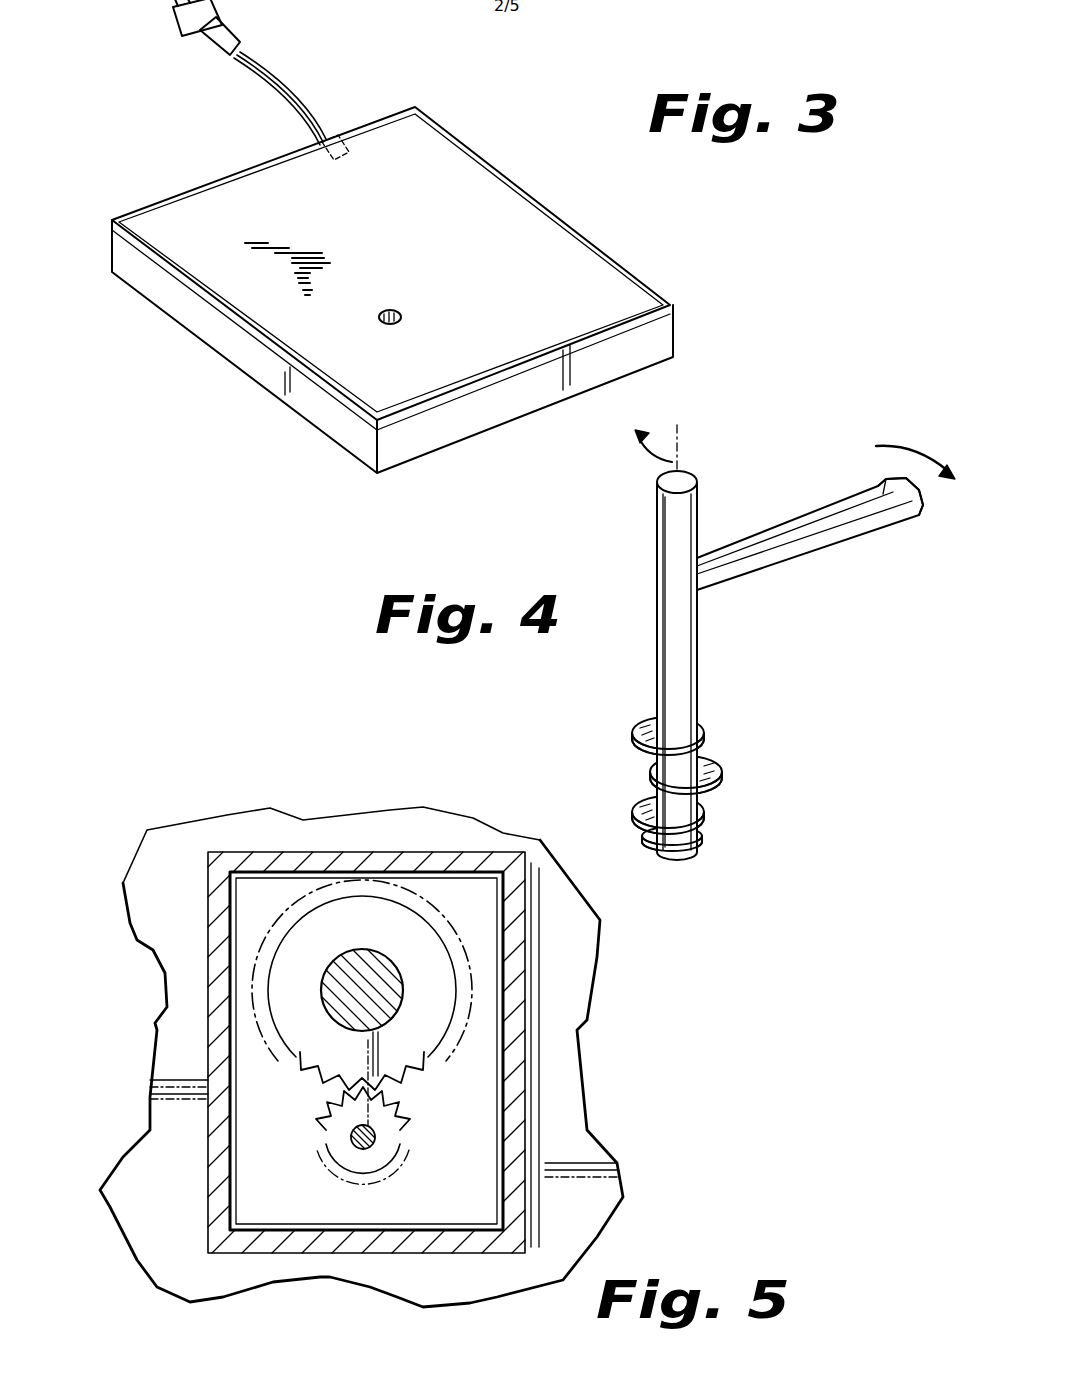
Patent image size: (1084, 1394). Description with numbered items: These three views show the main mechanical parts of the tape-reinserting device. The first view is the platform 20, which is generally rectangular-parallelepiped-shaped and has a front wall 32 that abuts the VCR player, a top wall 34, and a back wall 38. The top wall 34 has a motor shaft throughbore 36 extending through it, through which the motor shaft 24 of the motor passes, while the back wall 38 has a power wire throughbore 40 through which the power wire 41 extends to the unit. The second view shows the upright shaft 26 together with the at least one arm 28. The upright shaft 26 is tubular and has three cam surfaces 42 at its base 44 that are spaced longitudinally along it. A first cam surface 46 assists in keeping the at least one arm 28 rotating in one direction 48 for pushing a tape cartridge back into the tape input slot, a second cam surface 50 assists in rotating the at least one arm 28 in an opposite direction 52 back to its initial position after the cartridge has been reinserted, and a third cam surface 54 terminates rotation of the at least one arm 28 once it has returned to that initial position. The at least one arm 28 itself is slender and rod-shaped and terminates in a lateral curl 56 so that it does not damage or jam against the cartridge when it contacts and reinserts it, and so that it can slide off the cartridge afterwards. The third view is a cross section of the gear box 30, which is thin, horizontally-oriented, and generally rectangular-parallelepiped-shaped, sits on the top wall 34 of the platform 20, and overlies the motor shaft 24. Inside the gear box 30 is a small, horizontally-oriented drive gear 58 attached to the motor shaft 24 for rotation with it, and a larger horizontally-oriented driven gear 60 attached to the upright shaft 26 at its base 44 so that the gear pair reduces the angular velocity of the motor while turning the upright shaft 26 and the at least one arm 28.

In FIG. 3, the platform 20 is at (513, 128).
In FIG. 5, the motor shaft 24 is at (353, 1140).
In FIG. 4, the upright shaft 26 is at (667, 630).
In FIG. 5, the upright shaft 26 is at (350, 950).
In FIG. 4, the at least one arm 28 is at (786, 540).
In FIG. 5, the gear box 30 is at (242, 838).
In FIG. 3, the front wall 32 is at (655, 333).
In FIG. 3, the top wall 34 is at (537, 257).
In FIG. 5, the top wall 34 is at (153, 860).
In FIG. 3, the motor shaft throughbore 36 is at (393, 310).
In FIG. 3, the back wall 38 is at (186, 194).
In FIG. 3, the power wire throughbore 40 is at (340, 152).
In FIG. 3, the power wire 41 is at (296, 101).
In FIG. 4, the three cam surfaces 42 is at (793, 748).
In FIG. 4, the base 44 is at (697, 840).
In FIG. 5, the base 44 is at (392, 987).
In FIG. 4, the first cam surface 46 is at (638, 730).
In FIG. 4, the one direction 48 is at (904, 458).
In FIG. 4, the second cam surface 50 is at (717, 772).
In FIG. 4, the opposite direction 52 is at (655, 462).
In FIG. 4, the third cam surface 54 is at (635, 805).
In FIG. 4, the lateral curl 56 is at (920, 512).
In FIG. 5, the drive gear 58 is at (413, 1143).
In FIG. 5, the driven gear 60 is at (448, 1067).